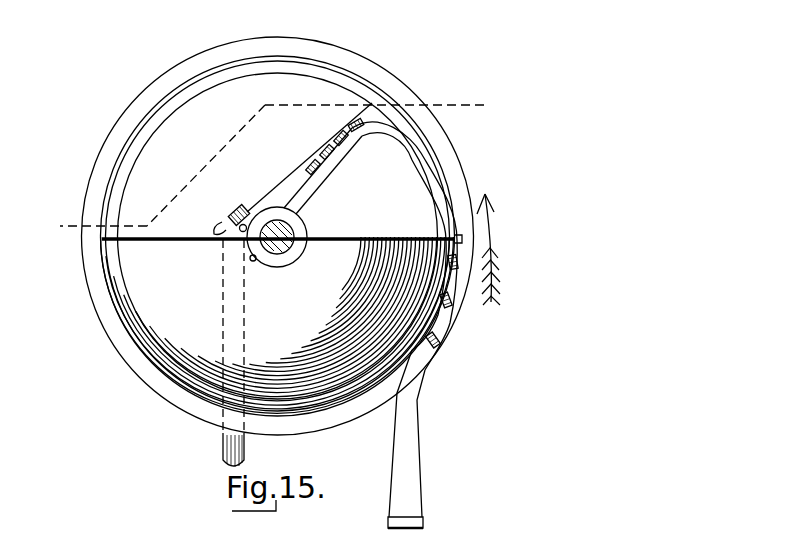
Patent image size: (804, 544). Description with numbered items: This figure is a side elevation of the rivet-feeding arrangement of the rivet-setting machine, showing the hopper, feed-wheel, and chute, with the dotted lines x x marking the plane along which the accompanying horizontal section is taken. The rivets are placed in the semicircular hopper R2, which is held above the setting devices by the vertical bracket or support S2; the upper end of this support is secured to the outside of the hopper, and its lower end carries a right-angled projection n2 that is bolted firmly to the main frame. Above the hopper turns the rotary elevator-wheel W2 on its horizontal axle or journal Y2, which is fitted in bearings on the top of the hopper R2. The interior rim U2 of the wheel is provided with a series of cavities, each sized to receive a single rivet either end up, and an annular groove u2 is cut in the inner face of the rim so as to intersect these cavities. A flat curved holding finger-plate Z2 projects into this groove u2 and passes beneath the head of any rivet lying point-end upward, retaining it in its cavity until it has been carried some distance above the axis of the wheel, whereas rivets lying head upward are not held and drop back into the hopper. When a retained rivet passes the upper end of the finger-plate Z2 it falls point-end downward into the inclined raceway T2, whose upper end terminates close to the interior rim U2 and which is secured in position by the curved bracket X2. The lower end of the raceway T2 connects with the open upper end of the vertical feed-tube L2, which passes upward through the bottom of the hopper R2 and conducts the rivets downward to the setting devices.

The rotary elevator-wheel W2 is at (278, 236).
The annular groove u2 is at (333, 67).
The interior rim U2 is at (278, 236).
The line of section x is at (270, 165).
The semicircular hopper R2 is at (278, 325).
The horizontal axle or journal Y2 is at (292, 225).
The inclined raceway T2 is at (293, 169).
The flat curved holding finger-plate Z2 is at (385, 92).
The curved bracket X2 is at (379, 181).
The vertical feed-tube L2 is at (241, 353).
The vertical bracket or support S2 is at (407, 433).
The right-angled projection n2 is at (423, 519).